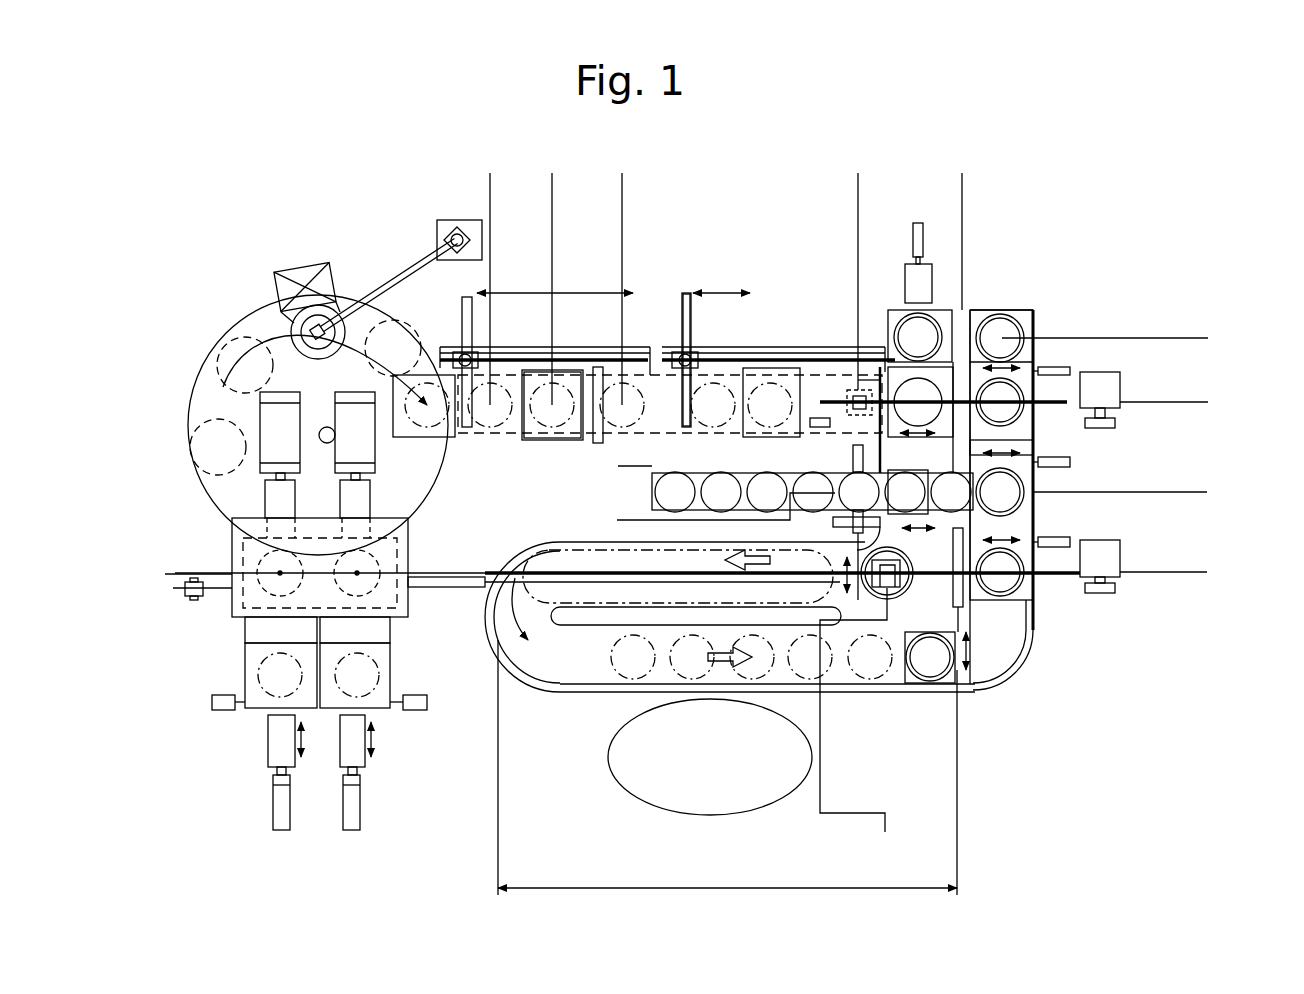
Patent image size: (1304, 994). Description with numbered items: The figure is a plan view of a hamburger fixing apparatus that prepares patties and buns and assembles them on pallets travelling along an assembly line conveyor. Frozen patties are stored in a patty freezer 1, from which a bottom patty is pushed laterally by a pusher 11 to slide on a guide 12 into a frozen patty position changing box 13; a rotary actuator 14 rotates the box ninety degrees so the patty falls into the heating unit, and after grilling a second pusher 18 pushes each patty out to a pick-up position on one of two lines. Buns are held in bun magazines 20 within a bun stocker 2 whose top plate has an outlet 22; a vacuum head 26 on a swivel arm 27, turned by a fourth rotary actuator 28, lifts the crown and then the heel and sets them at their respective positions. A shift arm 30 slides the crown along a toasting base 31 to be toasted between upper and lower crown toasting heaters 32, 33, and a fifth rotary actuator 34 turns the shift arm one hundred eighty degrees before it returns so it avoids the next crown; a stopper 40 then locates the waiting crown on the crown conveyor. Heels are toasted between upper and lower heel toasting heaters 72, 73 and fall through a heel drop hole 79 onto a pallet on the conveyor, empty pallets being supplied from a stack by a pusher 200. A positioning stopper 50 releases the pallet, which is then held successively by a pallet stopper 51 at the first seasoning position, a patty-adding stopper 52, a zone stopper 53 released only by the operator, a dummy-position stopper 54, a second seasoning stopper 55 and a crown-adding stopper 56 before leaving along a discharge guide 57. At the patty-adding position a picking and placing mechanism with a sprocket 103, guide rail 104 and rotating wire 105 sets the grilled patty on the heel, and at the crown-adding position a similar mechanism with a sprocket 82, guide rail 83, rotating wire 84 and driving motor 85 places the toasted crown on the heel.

The patty freezer 1 is at (228, 540).
The bun stocker 2 is at (198, 332).
The pusher 11 is at (347, 422).
The guide 12 is at (245, 640).
The frozen patty position changing box 13 is at (247, 680).
The rotary actuator 14 is at (220, 712).
The second pusher 18 is at (268, 812).
The bun magazine 20 is at (236, 338).
The outlet 22 is at (281, 305).
The vacuum head 26 is at (340, 305).
The swivel arm 27 is at (413, 270).
The fourth rotary actuator 28 is at (477, 220).
The shift arm 30 is at (470, 298).
The toasting base 31 is at (513, 425).
The upper crown toasting heater 32 is at (537, 370).
The lower crown toasting heater 33 is at (552, 405).
The fifth rotary actuator 34 is at (470, 352).
The stopper 40 is at (845, 375).
The positioning stopper 50 is at (990, 440).
The pallet stopper 51 is at (950, 530).
The P3 stopper 52 is at (850, 600).
The zone D stopper 53 is at (955, 680).
The DA stopper 54 is at (1035, 540).
The S2 stopper 55 is at (1037, 478).
The C7 stopper 56 is at (1033, 357).
The discharge guide 57 is at (1030, 310).
The upper heel toasting heater 72 is at (753, 358).
The lower heel toasting heater 73 is at (686, 360).
The heel drop hole 79 is at (988, 310).
The sprocket 82 is at (790, 358).
The guide rail 83 is at (878, 355).
The rotating wire 84 is at (1090, 420).
The driving motor 85 is at (1113, 372).
The sprocket 103 is at (190, 598).
The guide rail 104 is at (447, 578).
The rotating wire 105 is at (1045, 588).
The pusher 200 is at (933, 283).